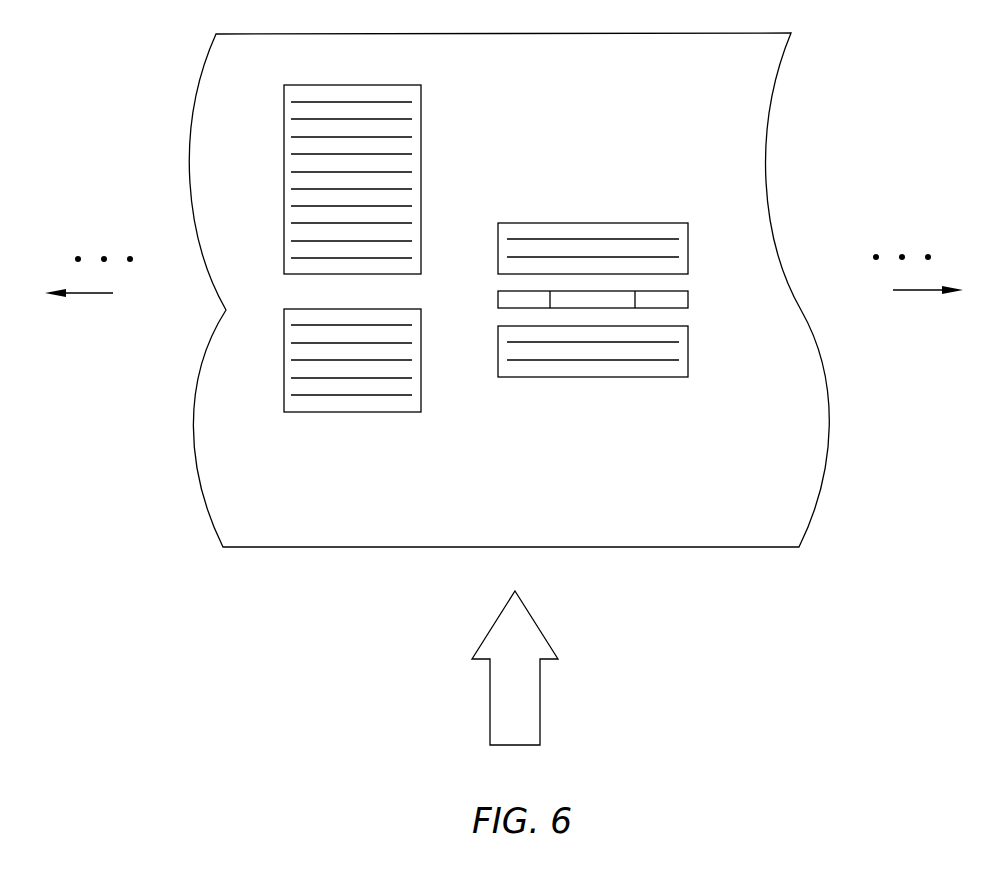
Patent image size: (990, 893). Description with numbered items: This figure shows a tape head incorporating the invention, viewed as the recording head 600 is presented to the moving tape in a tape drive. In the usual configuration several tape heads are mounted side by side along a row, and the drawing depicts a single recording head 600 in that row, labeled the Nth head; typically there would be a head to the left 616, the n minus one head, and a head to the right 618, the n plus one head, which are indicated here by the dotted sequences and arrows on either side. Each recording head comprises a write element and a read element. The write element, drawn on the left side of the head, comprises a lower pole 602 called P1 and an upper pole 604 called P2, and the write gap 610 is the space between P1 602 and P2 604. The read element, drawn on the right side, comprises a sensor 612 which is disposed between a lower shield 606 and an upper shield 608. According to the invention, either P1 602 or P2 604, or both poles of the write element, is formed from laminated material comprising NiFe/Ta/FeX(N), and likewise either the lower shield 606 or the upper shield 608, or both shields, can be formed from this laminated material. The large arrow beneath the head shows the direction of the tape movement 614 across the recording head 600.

The recording head 600 is at (752, 584).
The lower pole 602 is at (369, 412).
The upper pole 604 is at (421, 100).
The lower shield 606 is at (619, 377).
The upper shield 608 is at (618, 222).
The write gap 610 is at (413, 290).
The sensor 612 is at (620, 308).
The direction of tape movement 614 is at (540, 700).
The head to the left 616 is at (103, 318).
The head to the right 618 is at (903, 315).